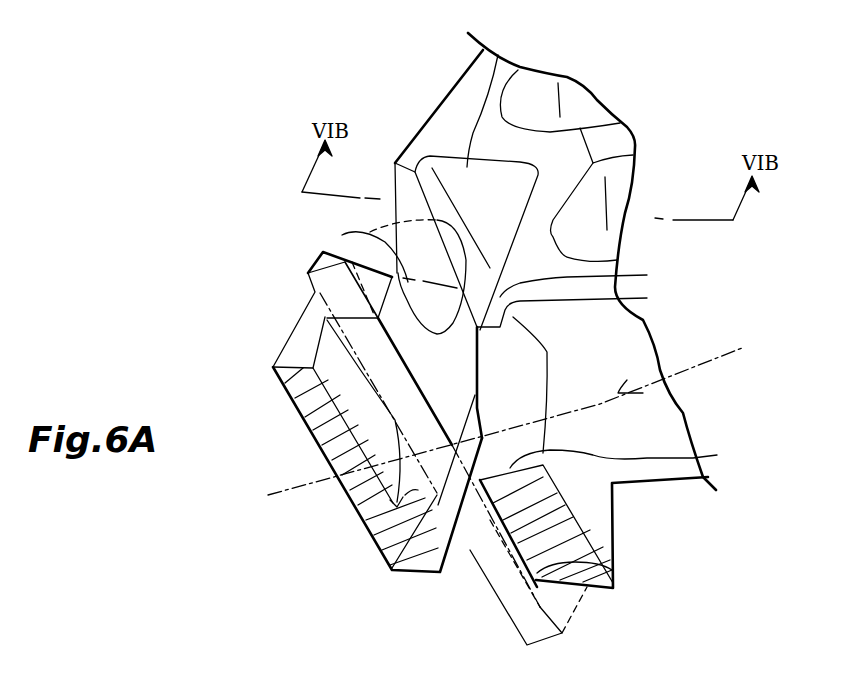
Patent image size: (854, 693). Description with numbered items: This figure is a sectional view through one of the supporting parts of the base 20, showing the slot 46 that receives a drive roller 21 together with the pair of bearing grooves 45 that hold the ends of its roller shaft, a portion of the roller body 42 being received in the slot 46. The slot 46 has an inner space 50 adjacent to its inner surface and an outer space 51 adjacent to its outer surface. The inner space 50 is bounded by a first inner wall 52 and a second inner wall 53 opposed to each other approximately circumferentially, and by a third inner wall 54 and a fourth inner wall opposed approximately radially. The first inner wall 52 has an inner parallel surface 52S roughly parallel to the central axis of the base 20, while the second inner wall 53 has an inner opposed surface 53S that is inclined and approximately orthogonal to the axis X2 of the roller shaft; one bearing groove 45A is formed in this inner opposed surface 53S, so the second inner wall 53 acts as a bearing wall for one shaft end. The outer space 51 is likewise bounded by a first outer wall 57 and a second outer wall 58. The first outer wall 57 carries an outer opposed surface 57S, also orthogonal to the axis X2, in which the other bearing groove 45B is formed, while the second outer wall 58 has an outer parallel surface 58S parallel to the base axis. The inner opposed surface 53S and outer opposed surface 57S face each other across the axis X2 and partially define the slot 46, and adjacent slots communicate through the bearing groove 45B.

The base 20 is at (543, 147).
The drive roller 21 is at (317, 290).
The roller body 42 is at (527, 643).
The bearing grooves 45 is at (373, 247).
The bearing groove 45A is at (400, 553).
The bearing groove 45B is at (645, 398).
The slot 46 is at (560, 347).
The inner space 50 is at (512, 202).
The outer space 51 is at (495, 548).
The first inner wall 52 is at (613, 277).
The inner parallel surface 52S is at (553, 220).
The second inner wall 53 is at (412, 162).
The inner opposed surface 53S is at (418, 343).
The third inner wall 54 is at (498, 55).
The first outer wall 57 is at (543, 527).
The outer opposed surface 57S is at (615, 571).
The second outer wall 58 is at (388, 555).
The outer parallel surface 58S is at (455, 545).
The axis of the roller shaft X2 is at (523, 415).